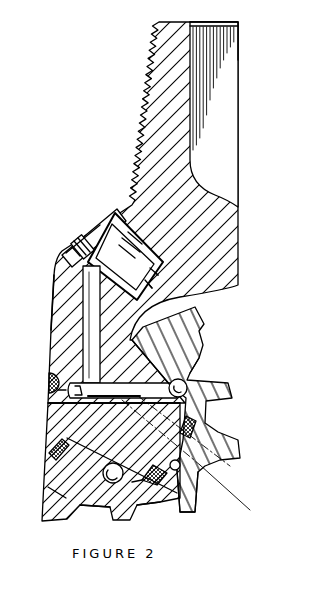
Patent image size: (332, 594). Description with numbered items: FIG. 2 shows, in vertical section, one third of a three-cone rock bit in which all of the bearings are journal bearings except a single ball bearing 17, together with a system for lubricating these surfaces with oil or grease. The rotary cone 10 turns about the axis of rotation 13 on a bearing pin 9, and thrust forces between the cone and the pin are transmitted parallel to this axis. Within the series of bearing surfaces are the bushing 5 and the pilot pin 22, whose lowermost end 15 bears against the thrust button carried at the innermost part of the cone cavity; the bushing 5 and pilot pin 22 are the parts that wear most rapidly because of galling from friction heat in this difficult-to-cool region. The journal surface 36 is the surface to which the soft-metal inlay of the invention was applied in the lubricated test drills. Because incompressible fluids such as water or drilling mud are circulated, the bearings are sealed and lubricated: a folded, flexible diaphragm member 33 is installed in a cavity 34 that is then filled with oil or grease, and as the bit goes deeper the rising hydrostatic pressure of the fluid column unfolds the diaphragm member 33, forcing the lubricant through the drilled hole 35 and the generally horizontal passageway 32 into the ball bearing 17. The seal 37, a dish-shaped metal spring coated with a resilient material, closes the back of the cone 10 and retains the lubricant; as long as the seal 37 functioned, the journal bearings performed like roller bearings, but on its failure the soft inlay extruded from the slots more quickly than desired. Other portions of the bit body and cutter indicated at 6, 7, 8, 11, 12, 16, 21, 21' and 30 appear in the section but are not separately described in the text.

The bushing 5 is at (148, 512).
The body 6 is at (61, 283).
The threaded portion 7 is at (147, 97).
The body side wall 8 is at (51, 306).
The lever 9 is at (112, 446).
The cone 10 is at (42, 503).
The bottom notch 11 is at (96, 512).
The top edge 12 is at (239, 22).
The axis of rotation 13 is at (250, 510).
The lowermost end of the pilot pin 15 is at (207, 483).
The pawl element 16 is at (180, 426).
The ball bearing 17 is at (104, 476).
The detent ball 21 is at (207, 380).
The second detent ball 21' is at (124, 463).
The pilot pin 22 is at (218, 430).
The recess 30 is at (227, 134).
The generally horizontal passageway 32 is at (122, 392).
The folded flexible diaphragm member 33 is at (130, 236).
The cavity 34 is at (148, 285).
The drilled hole 35 is at (88, 344).
The journal surface 36 is at (88, 446).
The seal 37 is at (48, 455).